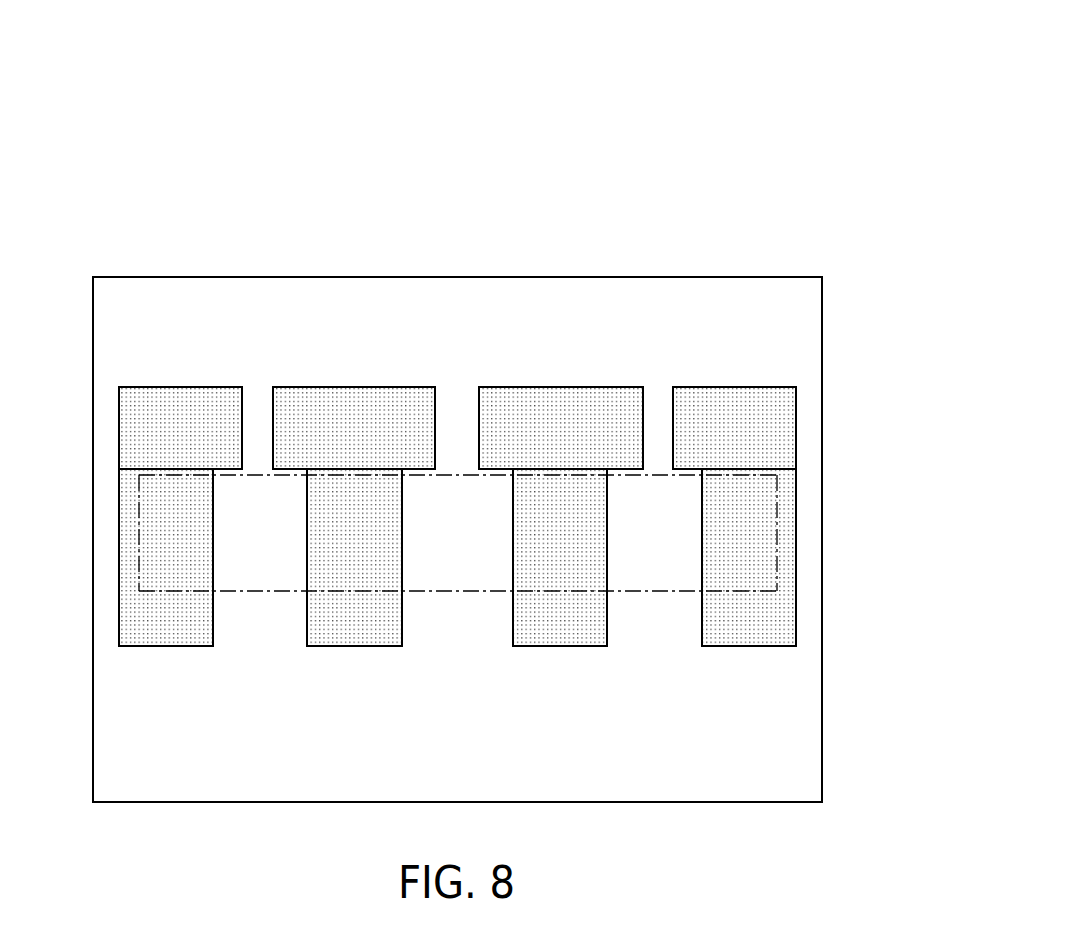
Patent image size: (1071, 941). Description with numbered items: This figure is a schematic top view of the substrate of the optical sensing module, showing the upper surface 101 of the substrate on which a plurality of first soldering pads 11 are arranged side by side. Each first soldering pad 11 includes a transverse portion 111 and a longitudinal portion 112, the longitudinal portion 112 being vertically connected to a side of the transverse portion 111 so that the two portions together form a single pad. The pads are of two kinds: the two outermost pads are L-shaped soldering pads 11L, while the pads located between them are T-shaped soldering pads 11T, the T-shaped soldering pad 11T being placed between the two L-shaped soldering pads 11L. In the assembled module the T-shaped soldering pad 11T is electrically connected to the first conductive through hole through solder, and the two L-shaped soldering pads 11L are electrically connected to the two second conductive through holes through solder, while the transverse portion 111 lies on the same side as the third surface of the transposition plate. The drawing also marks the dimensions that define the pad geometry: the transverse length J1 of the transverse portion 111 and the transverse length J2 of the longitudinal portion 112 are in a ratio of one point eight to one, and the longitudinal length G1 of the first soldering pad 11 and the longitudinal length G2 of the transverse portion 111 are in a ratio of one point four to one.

The first soldering pad 11 is at (882, 10).
The transverse portion 111 is at (198, 403).
The longitudinal portion 112 is at (163, 637).
The L-shaped soldering pad 11L is at (157, 393).
The T-shaped soldering pad 11T is at (319, 393).
The upper surface 101 is at (622, 303).
The longitudinal length of the first soldering pad G1 is at (796, 387).
The longitudinal length of the transverse portion G2 is at (119, 469).
The transverse length of the transverse portion J1 is at (435, 387).
The transverse length of the longitudinal portion J2 is at (307, 648).